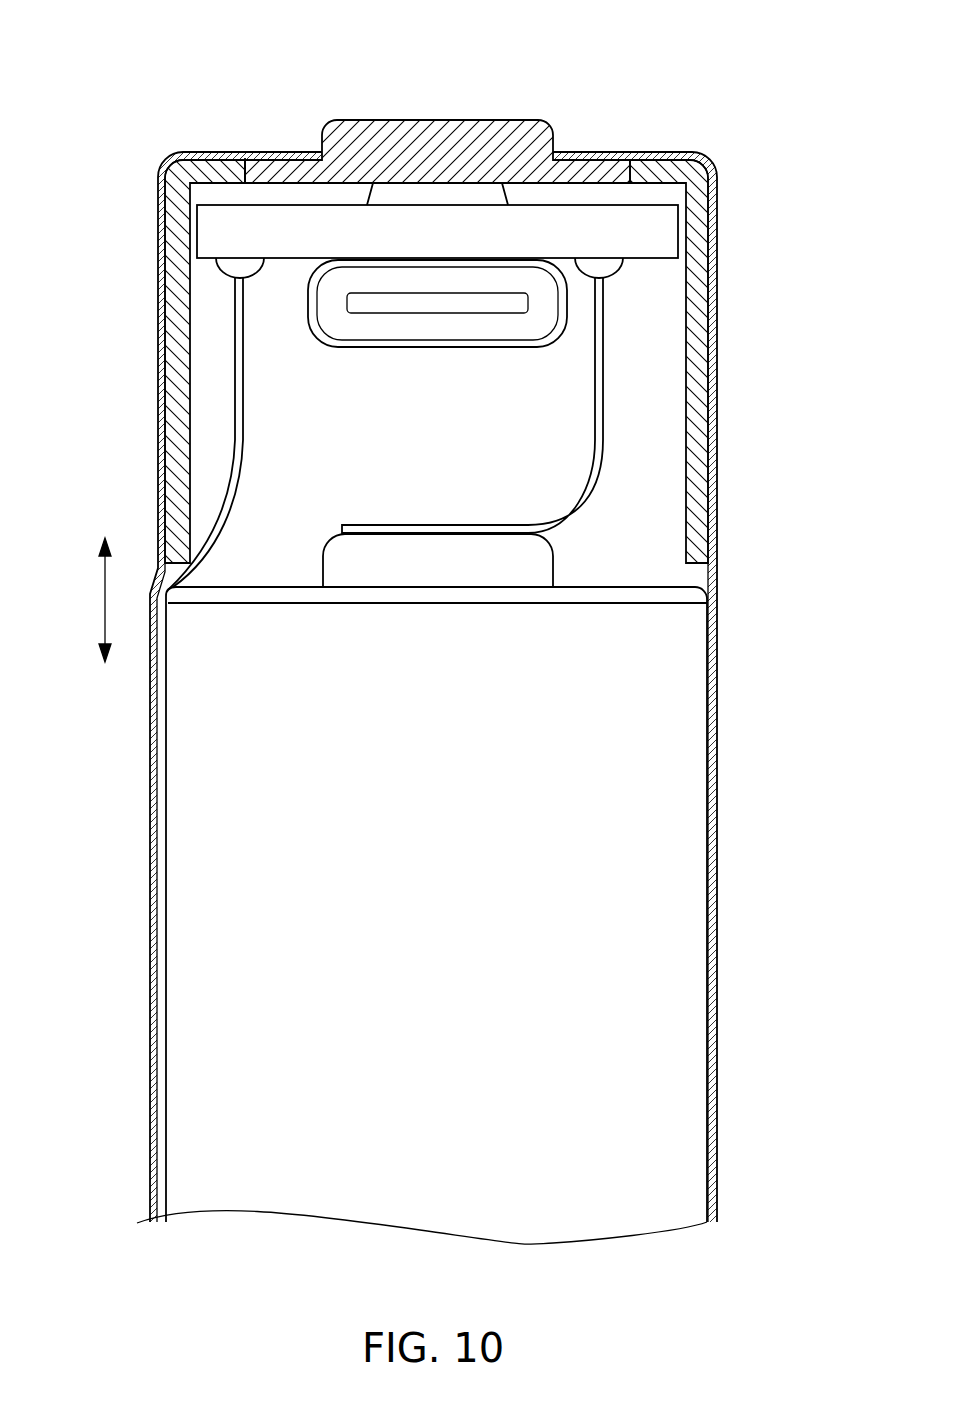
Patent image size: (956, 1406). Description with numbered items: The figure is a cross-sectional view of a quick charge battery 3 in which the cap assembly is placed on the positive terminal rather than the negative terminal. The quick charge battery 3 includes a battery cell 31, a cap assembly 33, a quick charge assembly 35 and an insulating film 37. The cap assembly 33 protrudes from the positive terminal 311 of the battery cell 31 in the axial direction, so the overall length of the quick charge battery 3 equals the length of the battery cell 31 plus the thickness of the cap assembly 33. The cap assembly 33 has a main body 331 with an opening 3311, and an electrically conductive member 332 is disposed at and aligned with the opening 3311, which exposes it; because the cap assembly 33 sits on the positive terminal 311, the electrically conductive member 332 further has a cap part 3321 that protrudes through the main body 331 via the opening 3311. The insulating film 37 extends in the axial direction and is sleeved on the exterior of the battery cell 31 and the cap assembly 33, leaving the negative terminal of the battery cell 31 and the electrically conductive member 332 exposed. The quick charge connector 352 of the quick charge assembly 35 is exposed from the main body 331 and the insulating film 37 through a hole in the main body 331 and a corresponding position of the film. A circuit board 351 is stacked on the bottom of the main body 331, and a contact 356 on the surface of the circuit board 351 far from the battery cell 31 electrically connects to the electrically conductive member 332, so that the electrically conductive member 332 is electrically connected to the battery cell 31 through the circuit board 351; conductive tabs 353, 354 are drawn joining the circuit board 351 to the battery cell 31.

The quick charge battery 3 is at (111, 34).
The battery cell 31 is at (638, 857).
The positive terminal 311 is at (513, 565).
The cap assembly 33 is at (716, 164).
The main body 331 is at (178, 230).
The opening 3311 is at (250, 158).
The electrically conductive member 332 is at (292, 172).
The cap part 3321 is at (438, 130).
The quick charge assembly 35 is at (626, 316).
The circuit board 351 is at (652, 232).
The quick charge connector 352 is at (562, 300).
The first conductive tab 353 is at (240, 383).
The second conductive tab 354 is at (600, 409).
The contact 356 is at (490, 197).
The insulating film 37 is at (715, 727).